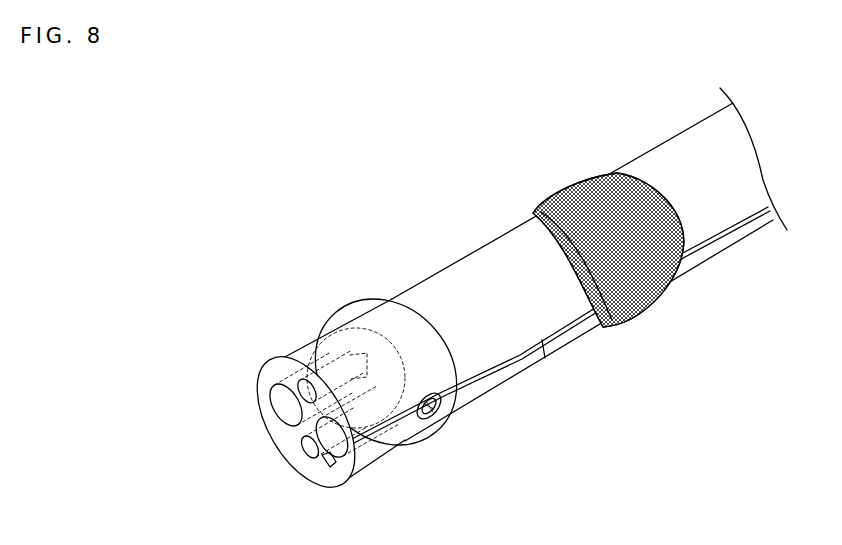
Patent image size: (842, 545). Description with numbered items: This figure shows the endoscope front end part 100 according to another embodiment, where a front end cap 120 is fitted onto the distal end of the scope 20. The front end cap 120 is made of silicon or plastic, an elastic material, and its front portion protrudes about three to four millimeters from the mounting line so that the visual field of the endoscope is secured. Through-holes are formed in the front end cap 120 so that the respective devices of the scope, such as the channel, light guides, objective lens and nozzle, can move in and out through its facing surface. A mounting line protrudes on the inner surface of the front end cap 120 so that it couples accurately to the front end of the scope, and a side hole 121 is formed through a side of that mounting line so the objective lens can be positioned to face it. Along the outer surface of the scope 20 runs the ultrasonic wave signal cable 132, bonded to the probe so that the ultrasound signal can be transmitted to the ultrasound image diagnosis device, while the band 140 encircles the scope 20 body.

The endoscope front end part 100 is at (478, 295).
The scope 20 is at (508, 247).
The front end cap 120 is at (273, 373).
The side hole 121 is at (441, 402).
The ultrasonic wave signal cable 132 is at (544, 357).
The hatched band ring 140 is at (583, 192).